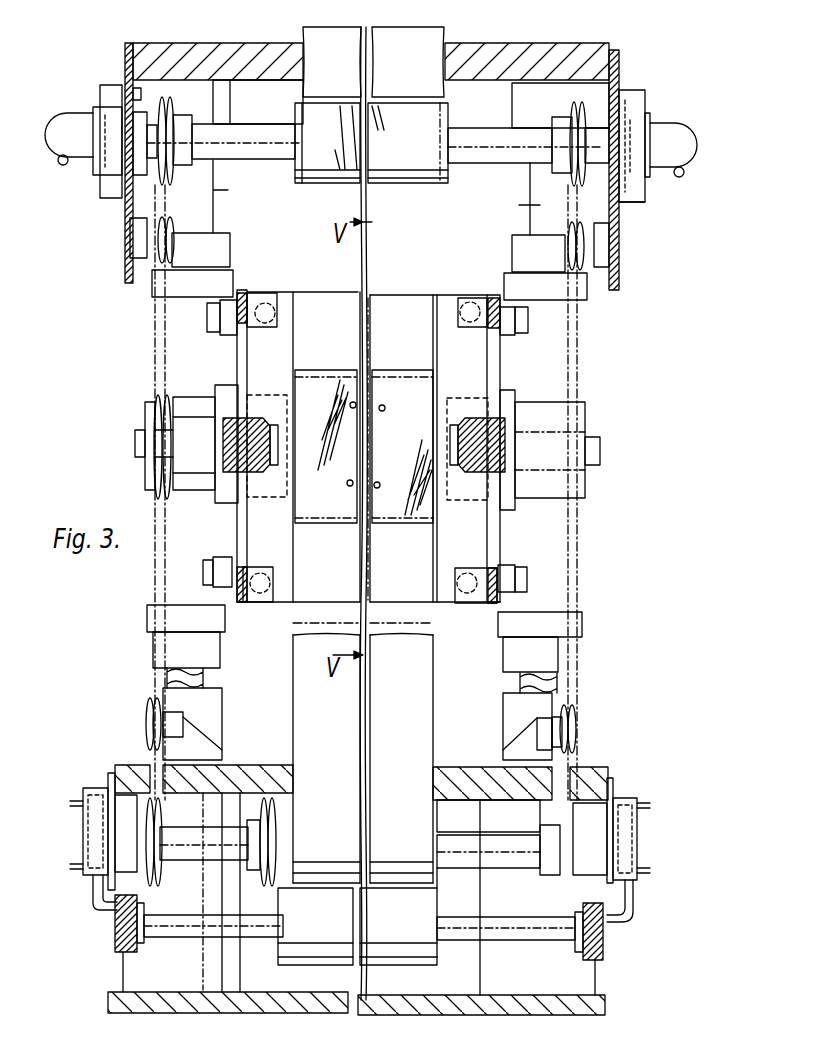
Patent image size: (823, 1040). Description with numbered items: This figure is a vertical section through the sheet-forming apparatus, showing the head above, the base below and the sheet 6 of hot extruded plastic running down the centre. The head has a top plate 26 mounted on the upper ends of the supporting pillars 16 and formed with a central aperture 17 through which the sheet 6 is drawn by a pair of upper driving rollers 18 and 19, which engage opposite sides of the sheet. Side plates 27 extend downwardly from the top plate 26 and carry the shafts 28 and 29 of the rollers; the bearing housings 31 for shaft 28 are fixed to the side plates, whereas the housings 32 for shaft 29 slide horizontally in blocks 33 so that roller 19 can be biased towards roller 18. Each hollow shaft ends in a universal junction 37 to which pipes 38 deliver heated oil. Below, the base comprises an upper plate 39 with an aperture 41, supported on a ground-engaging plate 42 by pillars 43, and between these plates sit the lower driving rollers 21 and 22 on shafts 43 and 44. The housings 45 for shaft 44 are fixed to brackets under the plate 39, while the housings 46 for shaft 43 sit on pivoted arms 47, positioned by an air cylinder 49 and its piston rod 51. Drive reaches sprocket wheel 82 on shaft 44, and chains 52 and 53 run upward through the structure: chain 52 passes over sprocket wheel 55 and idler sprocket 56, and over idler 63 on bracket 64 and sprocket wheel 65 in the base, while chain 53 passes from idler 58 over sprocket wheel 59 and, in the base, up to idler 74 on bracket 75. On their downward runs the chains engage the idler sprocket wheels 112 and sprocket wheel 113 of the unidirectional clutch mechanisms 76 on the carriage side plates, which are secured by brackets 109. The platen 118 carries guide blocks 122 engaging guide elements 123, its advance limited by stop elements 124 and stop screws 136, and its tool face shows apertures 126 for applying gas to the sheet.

The sheet 6 is at (411, 264).
The supporting pillars 16 is at (376, 197).
The aperture 17 is at (445, 80).
The upper driving roller 18 is at (322, 170).
The upper driving roller 19 is at (400, 183).
The lower driving roller 21 is at (430, 900).
The lower driving roller 22 is at (437, 812).
The top plate 26 is at (592, 55).
The side plates 27 is at (619, 285).
The shaft 28 is at (252, 137).
The shaft 29 is at (493, 150).
The bearing housings 31 is at (132, 93).
The bearing housings 32 is at (645, 110).
The blocks 33 is at (630, 200).
The universal junction 37 is at (70, 128).
The pipes 38 is at (63, 166).
The upper plate 39 is at (453, 767).
The aperture 41 is at (288, 765).
The ground-engaging plate 42 is at (530, 990).
The pillars / shaft 43 is at (500, 922).
The shaft 44 is at (520, 860).
The bearing housings 45 is at (596, 828).
The bearing housings 46 is at (578, 930).
The arms 47 is at (603, 945).
The air cylinder 49 is at (637, 848).
The piston rod 51 is at (632, 890).
The chain 52 is at (152, 577).
The chain 53 is at (577, 548).
The sprocket wheel 55 is at (172, 110).
The idler sprocket wheel 56 is at (172, 225).
The idler sprocket wheel 58 is at (588, 250).
The sprocket wheel 59 is at (575, 115).
The idler sprocket wheel 63 is at (146, 722).
The bracket 64 is at (200, 715).
The sprocket wheel 65 is at (160, 810).
The idler sprocket wheel 74 is at (577, 725).
The bracket 75 is at (540, 722).
The unidirectional clutch mechanism 76 is at (203, 458).
The sprocket wheel 82 is at (263, 875).
The brackets 109 is at (212, 320).
The idler sprocket wheels 112 is at (157, 395).
The sprocket wheel 113 is at (155, 418).
The platen 118 is at (292, 290).
The guide blocks 122 is at (460, 395).
The guide element 123 is at (255, 482).
The stop elements 124 is at (470, 298).
The apertures 126 is at (378, 483).
The stop screws 136 is at (262, 300).